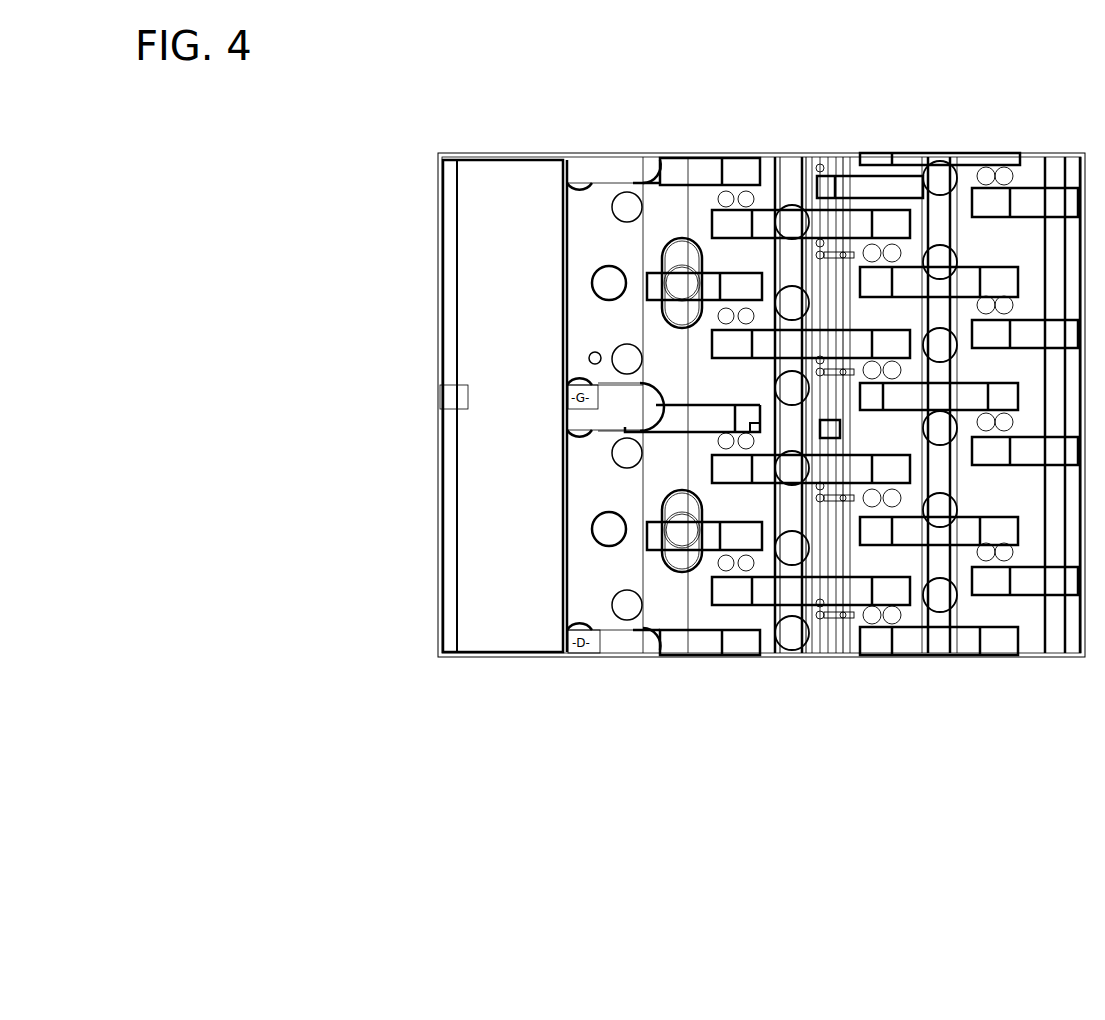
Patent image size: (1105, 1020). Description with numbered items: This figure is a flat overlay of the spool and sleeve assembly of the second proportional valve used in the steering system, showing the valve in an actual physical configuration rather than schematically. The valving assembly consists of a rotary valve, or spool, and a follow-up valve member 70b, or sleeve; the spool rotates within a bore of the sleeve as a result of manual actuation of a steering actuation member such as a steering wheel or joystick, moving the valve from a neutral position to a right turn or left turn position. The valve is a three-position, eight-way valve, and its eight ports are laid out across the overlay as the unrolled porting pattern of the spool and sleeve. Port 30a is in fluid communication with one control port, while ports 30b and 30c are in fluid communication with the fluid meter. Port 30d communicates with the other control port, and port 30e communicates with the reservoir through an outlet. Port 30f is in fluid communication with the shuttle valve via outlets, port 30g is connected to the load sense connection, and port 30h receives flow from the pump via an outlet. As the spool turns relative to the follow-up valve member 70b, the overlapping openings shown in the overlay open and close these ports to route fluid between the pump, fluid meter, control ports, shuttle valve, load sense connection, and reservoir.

The follow-up valve member 70b is at (552, 155).
The port 30a is at (733, 568).
The port 30b is at (787, 635).
The port 30c is at (938, 607).
The port 30d is at (995, 555).
The port 30e is at (634, 613).
The port 30f is at (843, 160).
The port 30g is at (819, 165).
The port 30h is at (886, 622).